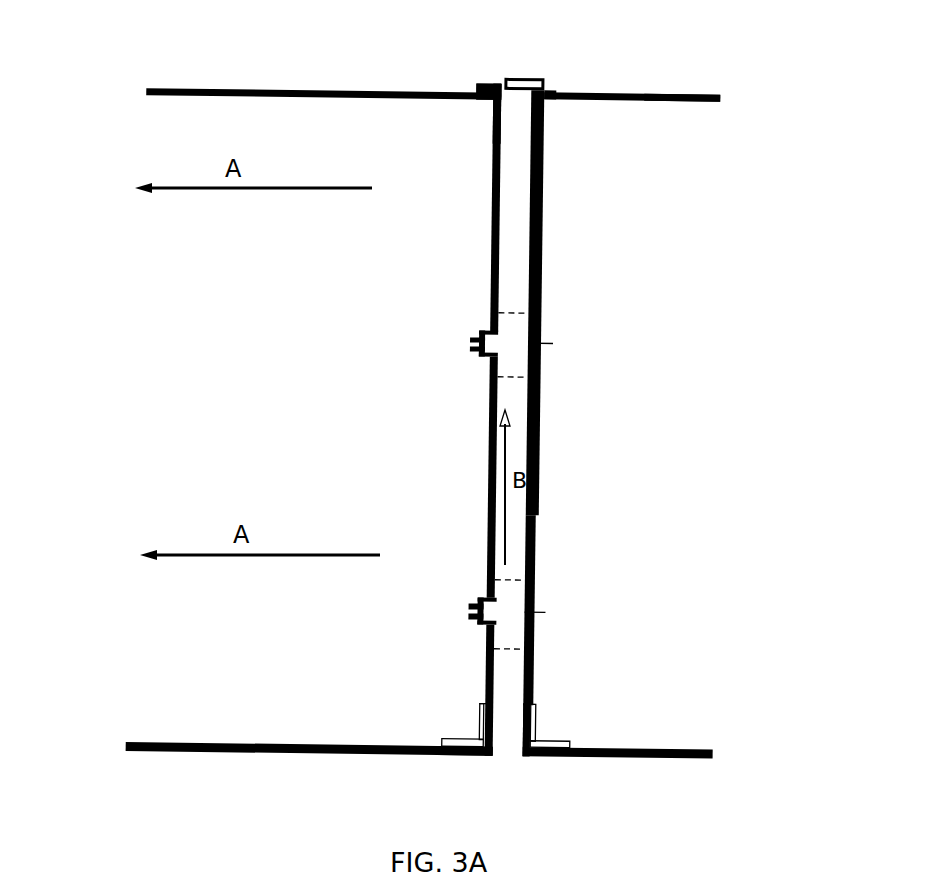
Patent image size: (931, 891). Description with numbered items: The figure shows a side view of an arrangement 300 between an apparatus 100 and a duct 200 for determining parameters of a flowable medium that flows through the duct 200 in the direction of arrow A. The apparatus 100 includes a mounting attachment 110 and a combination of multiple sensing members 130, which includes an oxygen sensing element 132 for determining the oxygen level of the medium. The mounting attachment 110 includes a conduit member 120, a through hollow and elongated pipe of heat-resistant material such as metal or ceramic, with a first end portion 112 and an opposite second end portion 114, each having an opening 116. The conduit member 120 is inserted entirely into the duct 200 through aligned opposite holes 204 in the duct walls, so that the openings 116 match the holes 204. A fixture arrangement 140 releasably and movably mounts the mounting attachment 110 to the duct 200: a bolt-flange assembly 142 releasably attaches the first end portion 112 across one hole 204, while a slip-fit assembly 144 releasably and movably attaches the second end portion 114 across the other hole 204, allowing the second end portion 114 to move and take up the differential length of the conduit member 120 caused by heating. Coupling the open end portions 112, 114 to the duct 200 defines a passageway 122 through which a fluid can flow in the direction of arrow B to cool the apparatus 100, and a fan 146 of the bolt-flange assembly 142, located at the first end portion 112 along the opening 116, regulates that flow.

The apparatus 100 is at (347, 378).
The mounting attachment 110 is at (465, 430).
The first end portion 112 is at (498, 141).
The second end portion 114 is at (485, 698).
The opening 116 is at (500, 77).
The conduit member 120 is at (541, 443).
The passageway 122 is at (505, 706).
The combination of multiple sensing members 130 is at (463, 330).
The oxygen sensing element 132 is at (541, 346).
The fixture arrangement 140 is at (562, 72).
The bolt-flange assembly 142 is at (552, 87).
The slip-fit assembly 144 is at (544, 734).
The fan 146 is at (521, 77).
The duct 200 is at (706, 92).
The aligned opposite holes 204 is at (500, 77).
The arrangement 300 is at (98, 673).